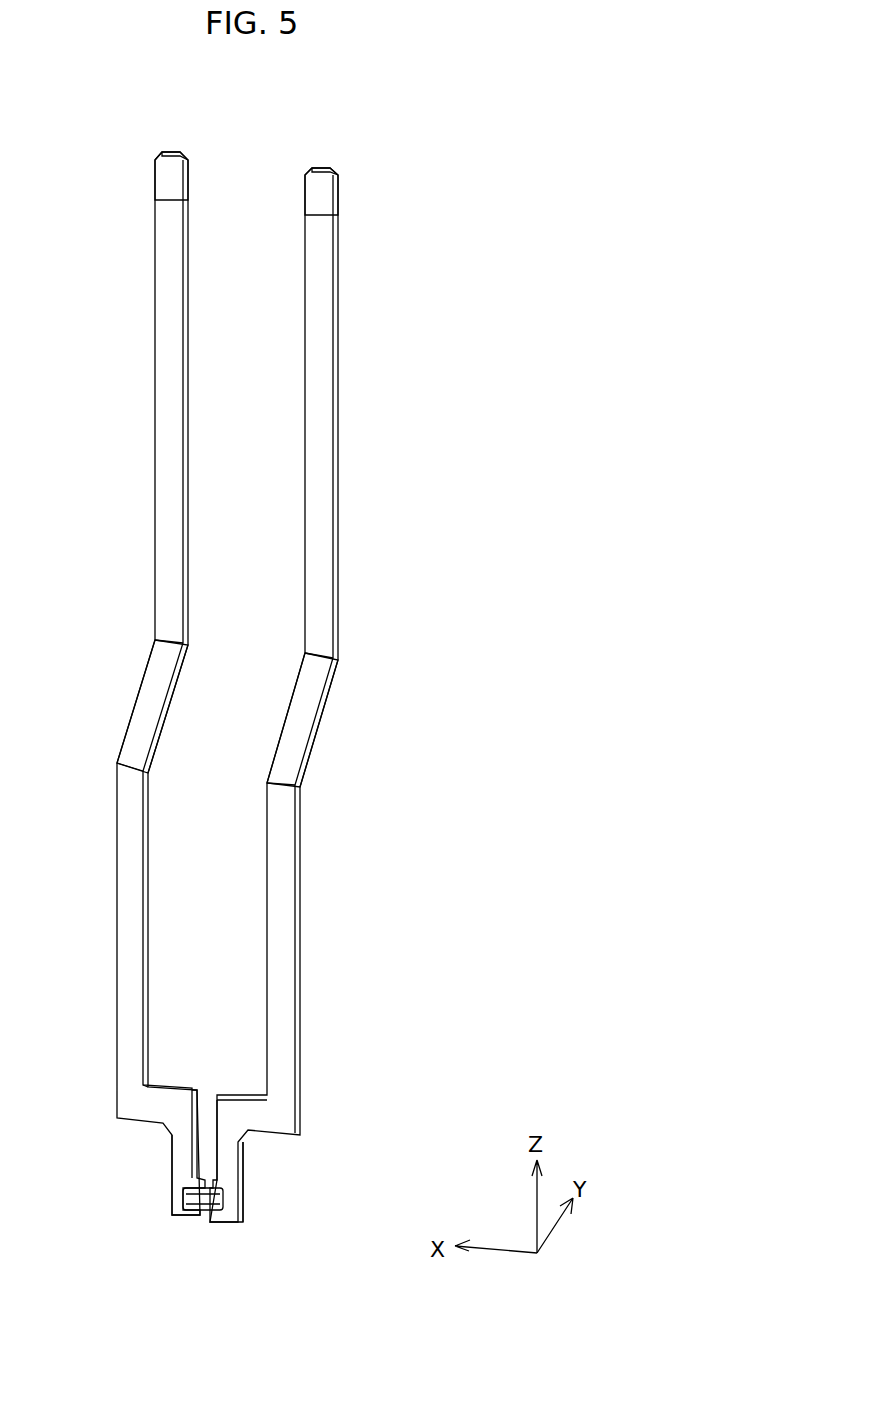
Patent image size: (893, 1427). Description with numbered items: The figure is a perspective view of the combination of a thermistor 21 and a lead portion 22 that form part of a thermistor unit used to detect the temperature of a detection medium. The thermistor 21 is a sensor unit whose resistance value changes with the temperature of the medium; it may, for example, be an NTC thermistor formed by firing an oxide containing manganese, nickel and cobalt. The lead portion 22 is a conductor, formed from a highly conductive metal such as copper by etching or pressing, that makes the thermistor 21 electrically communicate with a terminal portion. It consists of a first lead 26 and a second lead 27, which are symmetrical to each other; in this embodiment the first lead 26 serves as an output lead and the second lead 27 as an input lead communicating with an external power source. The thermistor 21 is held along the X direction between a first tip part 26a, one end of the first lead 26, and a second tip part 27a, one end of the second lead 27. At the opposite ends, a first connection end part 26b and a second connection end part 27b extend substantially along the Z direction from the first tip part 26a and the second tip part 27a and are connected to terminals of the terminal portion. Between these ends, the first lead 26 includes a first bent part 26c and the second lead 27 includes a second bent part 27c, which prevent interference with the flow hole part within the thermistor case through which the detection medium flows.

The thermistor 21 is at (198, 1202).
The lead portion 22 is at (269, 645).
The first lead 26 is at (244, 641).
The first tip part 26a is at (177, 1156).
The first connection end part 26b is at (172, 151).
The first bent part 26c is at (150, 700).
The second lead 27 is at (335, 651).
The second tip part 27a is at (228, 1163).
The second connection end part 27b is at (322, 166).
The second bent part 27c is at (298, 722).